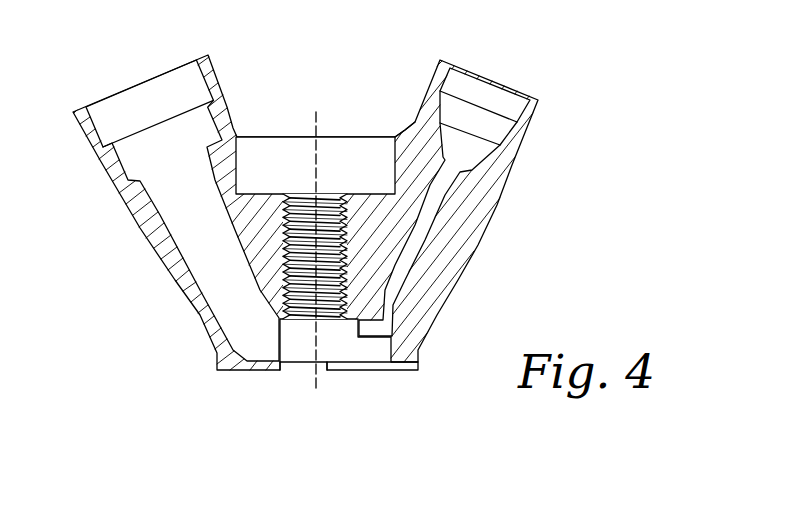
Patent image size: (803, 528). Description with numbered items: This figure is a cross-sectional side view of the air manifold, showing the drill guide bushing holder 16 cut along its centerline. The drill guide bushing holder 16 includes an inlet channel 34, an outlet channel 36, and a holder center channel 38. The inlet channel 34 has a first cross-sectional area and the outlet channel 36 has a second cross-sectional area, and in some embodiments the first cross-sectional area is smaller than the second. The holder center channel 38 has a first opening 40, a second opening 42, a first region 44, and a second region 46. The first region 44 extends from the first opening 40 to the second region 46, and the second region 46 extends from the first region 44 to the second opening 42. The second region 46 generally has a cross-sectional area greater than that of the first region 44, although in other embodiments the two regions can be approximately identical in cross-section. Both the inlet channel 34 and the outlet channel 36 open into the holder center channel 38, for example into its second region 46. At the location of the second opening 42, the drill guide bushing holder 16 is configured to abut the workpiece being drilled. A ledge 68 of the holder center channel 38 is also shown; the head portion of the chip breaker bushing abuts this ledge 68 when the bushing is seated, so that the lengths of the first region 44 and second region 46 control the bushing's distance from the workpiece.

The drill guide bushing holder 16 is at (632, 88).
The inlet channel 34 is at (443, 200).
The outlet channel 36 is at (177, 200).
The holder center channel 38 is at (307, 320).
The first opening 40 is at (328, 193).
The second opening 42 is at (324, 358).
The first region 44 is at (307, 197).
The second region 46 is at (350, 353).
The ledge 68 is at (253, 187).